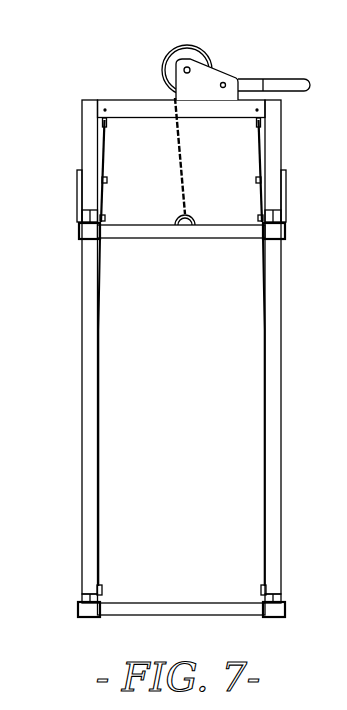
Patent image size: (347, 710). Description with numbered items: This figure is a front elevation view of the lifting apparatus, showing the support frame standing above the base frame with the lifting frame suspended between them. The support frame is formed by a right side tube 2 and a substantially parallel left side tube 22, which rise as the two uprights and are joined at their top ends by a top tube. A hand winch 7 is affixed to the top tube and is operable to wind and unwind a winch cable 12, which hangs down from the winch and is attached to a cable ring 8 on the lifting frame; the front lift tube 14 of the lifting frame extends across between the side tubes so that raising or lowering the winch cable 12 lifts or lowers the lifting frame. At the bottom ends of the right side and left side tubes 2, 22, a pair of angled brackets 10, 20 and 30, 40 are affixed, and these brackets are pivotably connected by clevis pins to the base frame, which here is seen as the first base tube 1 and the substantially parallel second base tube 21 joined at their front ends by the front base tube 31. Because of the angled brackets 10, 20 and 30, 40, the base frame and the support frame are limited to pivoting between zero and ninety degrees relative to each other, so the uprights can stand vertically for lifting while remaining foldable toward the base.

The first base tube 1 is at (278, 620).
The right side tube 2 is at (264, 437).
The hand winch 7 is at (160, 62).
The cable ring 8 is at (193, 214).
The angled bracket 10 is at (81, 586).
The winch cable 12 is at (175, 159).
The front lift tube 14 is at (168, 241).
The angled bracket 20 is at (104, 586).
The second base tube 21 is at (85, 620).
The left side tube 22 is at (81, 417).
The angled bracket 30 is at (259, 584).
The front base tube 31 is at (182, 601).
The angled bracket 40 is at (284, 585).